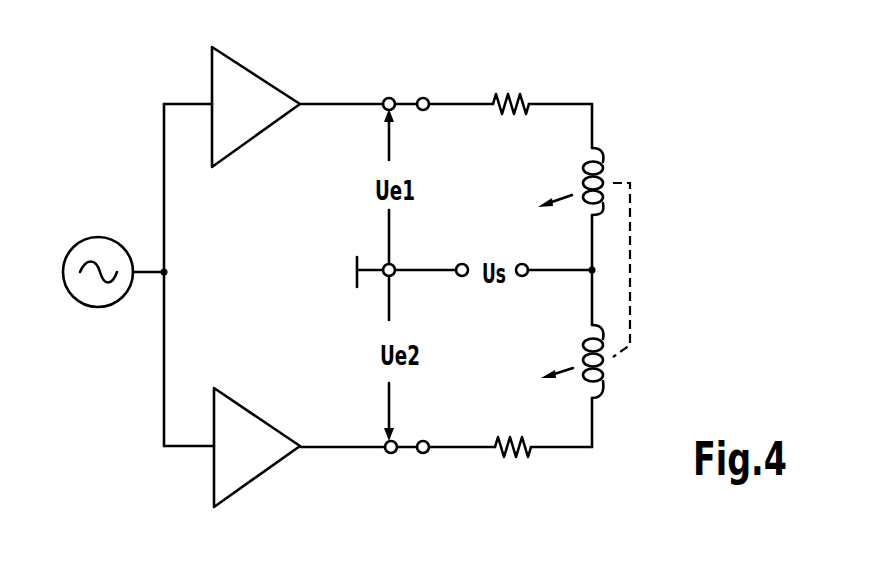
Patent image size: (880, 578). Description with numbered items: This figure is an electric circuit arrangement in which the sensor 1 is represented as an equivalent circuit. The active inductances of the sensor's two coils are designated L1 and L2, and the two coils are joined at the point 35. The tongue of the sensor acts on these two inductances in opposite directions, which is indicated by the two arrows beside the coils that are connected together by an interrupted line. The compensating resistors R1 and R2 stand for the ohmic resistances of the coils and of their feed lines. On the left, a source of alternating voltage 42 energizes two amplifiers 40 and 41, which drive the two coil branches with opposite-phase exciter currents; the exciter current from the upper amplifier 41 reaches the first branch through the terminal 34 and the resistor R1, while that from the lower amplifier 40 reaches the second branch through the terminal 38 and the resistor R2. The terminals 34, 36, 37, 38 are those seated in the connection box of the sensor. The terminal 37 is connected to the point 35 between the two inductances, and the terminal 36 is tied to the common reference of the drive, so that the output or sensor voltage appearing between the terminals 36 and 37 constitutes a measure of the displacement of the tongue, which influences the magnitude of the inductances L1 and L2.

The sensor 1 is at (603, 251).
The terminal 34 is at (423, 96).
The point 35 is at (589, 274).
The terminal 36 is at (465, 262).
The terminal 37 is at (527, 264).
The terminal 38 is at (423, 455).
The amplifier 40 is at (270, 470).
The amplifier 41 is at (272, 80).
The source of alternating voltage 42 is at (98, 308).
The compensating resistor R1 is at (511, 87).
The compensating resistor R2 is at (513, 468).
The active inductance L1 is at (625, 181).
The active inductance L2 is at (625, 361).